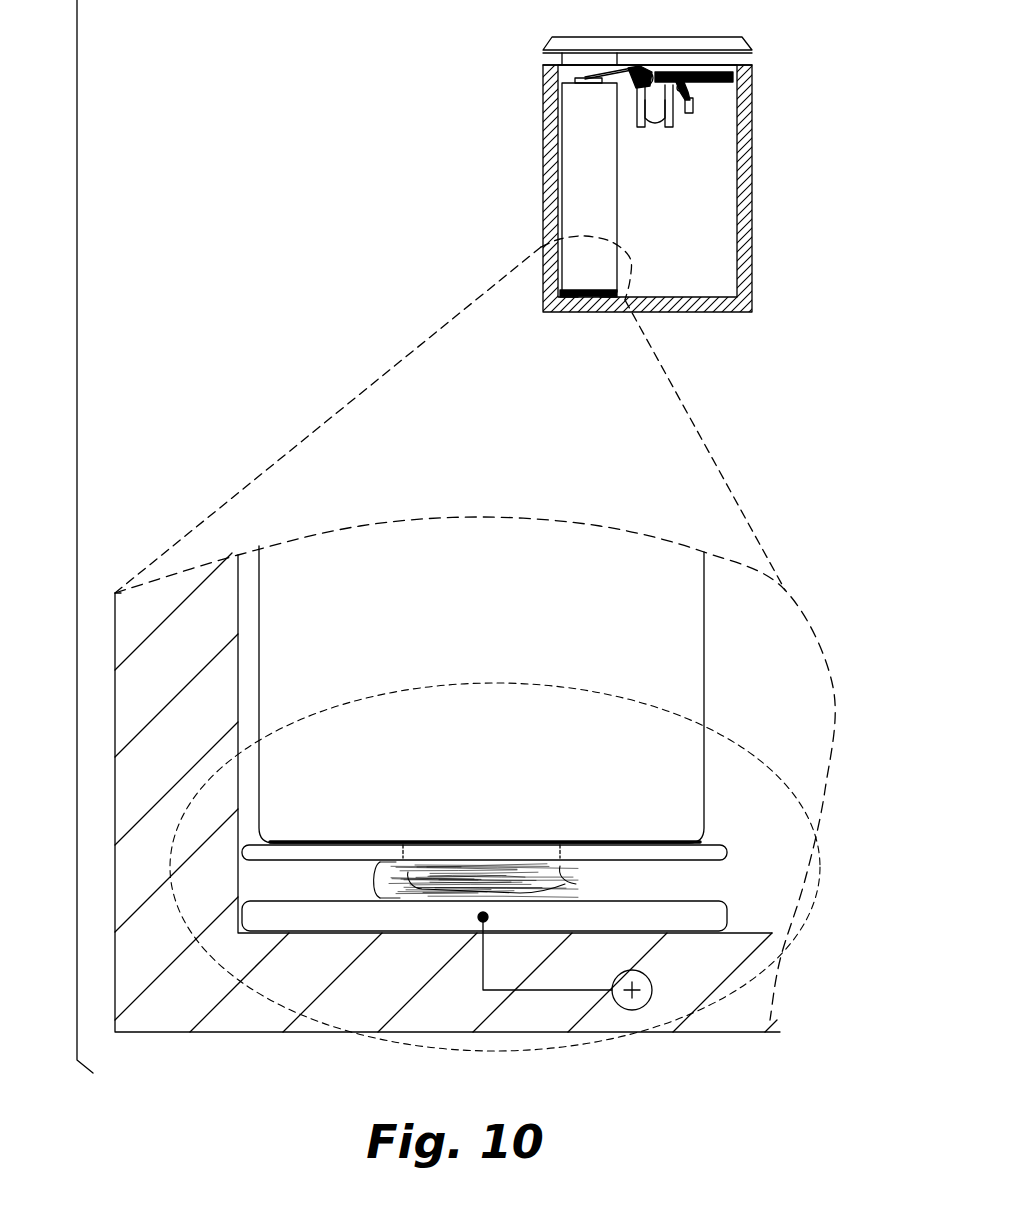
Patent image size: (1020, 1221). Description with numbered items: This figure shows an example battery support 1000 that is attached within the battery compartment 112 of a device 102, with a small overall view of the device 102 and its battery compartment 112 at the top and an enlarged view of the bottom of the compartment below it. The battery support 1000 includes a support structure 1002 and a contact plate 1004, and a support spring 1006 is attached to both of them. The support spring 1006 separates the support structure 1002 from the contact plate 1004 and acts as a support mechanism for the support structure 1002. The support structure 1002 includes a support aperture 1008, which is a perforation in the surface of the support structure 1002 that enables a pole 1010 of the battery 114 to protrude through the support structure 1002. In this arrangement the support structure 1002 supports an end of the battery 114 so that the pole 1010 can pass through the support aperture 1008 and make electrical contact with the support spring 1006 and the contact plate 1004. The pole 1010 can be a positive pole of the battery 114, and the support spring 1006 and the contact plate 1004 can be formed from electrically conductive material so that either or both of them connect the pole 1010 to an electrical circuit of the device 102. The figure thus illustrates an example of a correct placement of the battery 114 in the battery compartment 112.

The device 102 is at (524, 64).
The battery compartment 112 is at (683, 286).
The battery 114 is at (467, 630).
The battery support 1000 is at (373, 693).
The support structure 1002 is at (707, 852).
The contact plate 1004 is at (698, 912).
The support spring 1006 is at (373, 862).
The support aperture 1008 is at (403, 838).
The pole 1010 is at (558, 888).